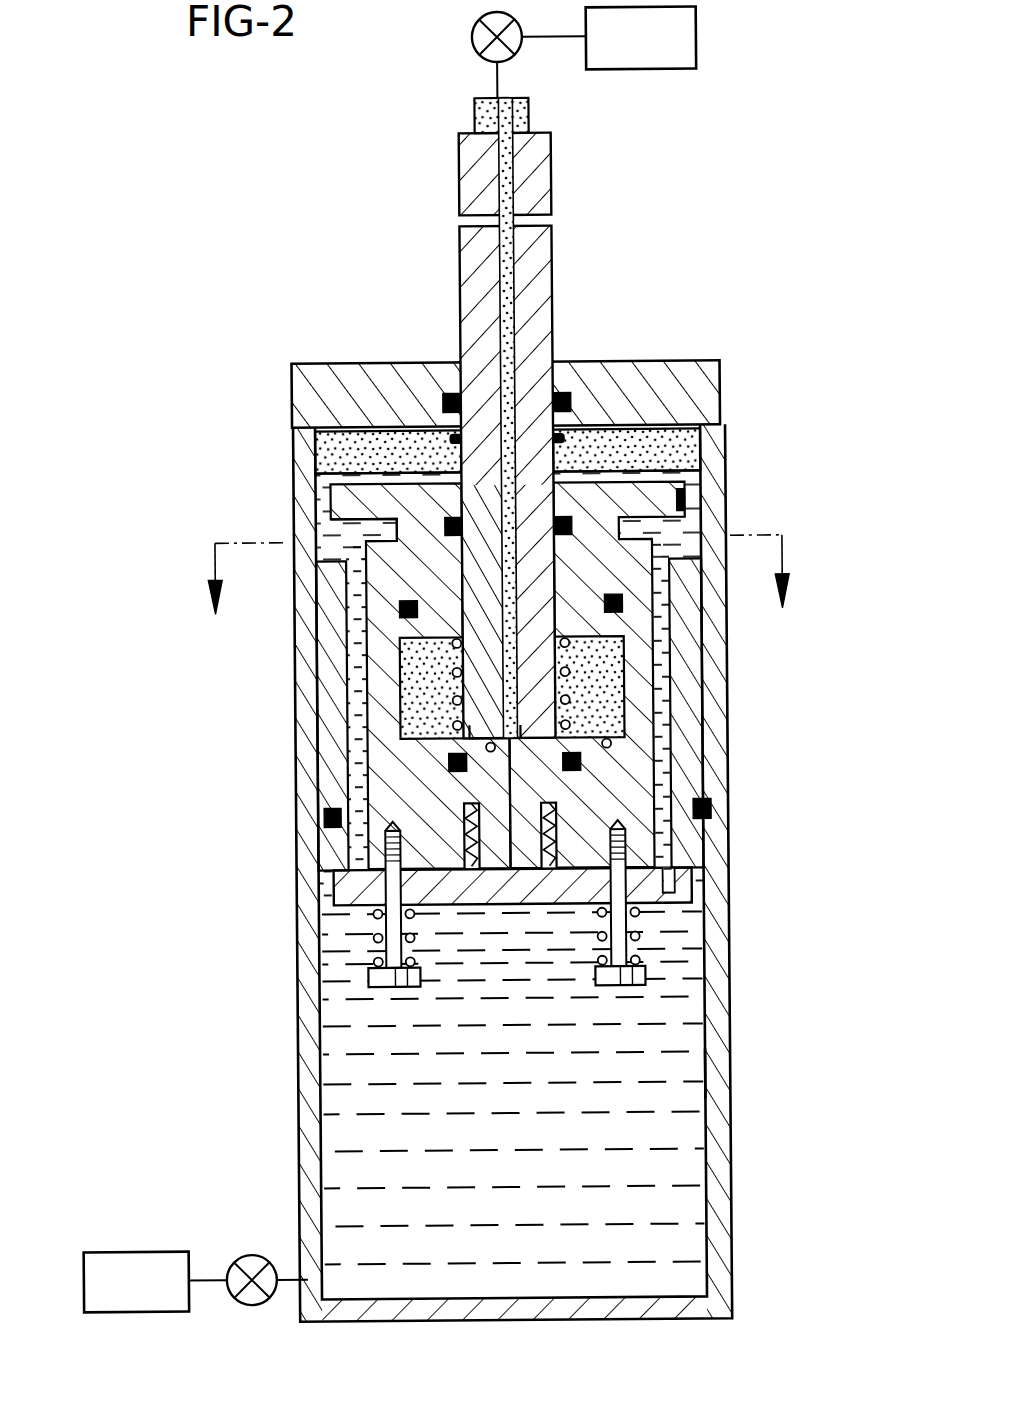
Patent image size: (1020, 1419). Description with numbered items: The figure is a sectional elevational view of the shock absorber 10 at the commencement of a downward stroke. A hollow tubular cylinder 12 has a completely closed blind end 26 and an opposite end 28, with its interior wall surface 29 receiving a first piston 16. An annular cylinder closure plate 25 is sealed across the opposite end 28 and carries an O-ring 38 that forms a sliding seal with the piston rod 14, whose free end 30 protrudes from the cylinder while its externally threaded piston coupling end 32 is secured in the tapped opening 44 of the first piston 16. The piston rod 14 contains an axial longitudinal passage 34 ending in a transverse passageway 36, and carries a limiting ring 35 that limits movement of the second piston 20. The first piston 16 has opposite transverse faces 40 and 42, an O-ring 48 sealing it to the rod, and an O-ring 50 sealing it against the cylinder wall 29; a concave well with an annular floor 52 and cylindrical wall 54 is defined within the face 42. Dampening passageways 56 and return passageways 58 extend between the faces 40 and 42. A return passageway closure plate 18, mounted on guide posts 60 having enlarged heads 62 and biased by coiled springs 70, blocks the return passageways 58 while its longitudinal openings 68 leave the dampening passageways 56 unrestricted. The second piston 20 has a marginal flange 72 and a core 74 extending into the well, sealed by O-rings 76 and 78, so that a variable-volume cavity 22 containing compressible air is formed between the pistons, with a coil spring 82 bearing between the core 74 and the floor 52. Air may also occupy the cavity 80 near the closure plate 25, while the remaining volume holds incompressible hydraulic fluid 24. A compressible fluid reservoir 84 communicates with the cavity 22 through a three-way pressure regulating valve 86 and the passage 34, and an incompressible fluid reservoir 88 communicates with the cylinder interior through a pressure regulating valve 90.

The shock absorber 10 is at (682, 272).
The tubular cylinder 12 is at (723, 957).
The piston rod 14 is at (554, 318).
The first piston 16 is at (677, 740).
The return passageway closure plate 18 is at (364, 885).
The second piston 20 is at (687, 484).
The cavity 22 is at (595, 690).
The incompressible fluid 24 is at (667, 1138).
The cylinder closure plate 25 is at (720, 374).
The blind end 26 is at (583, 1322).
The opposite end 28 is at (722, 438).
The interior wall surface 29 is at (704, 1080).
The free end 30 is at (553, 150).
The piston coupling end 32 is at (526, 849).
The longitudinal passage 34 is at (501, 322).
The limiting ring 35 is at (450, 441).
The transverse passageway 36 is at (490, 752).
The O-ring 38 is at (444, 400).
The transverse face 40 is at (582, 872).
The transverse face 42 is at (317, 532).
The tapped opening 44 is at (483, 838).
The O-ring 48 is at (446, 771).
The O-ring 50 is at (321, 815).
The annular floor 52 is at (610, 750).
The cylindrical wall 54 is at (396, 706).
The dampening passageways 56 is at (670, 665).
The return passageways 58 is at (354, 663).
The guide posts 60 is at (369, 916).
The enlarged heads 62 is at (403, 986).
The longitudinal openings 68 is at (666, 893).
The coiled spring 70 is at (367, 940).
The marginal flange 72 is at (677, 496).
The core 74 is at (389, 590).
The O-ring 76 is at (613, 594).
The O-ring 78 is at (444, 526).
The cavity 80 is at (327, 445).
The coil spring 82 is at (592, 643).
The compressible fluid reservoir 84 is at (699, 37).
The pressure regulating valve 86 is at (474, 39).
The incompressible fluid reservoir 88 is at (126, 1249).
The pressure regulating valve 90 is at (247, 1253).